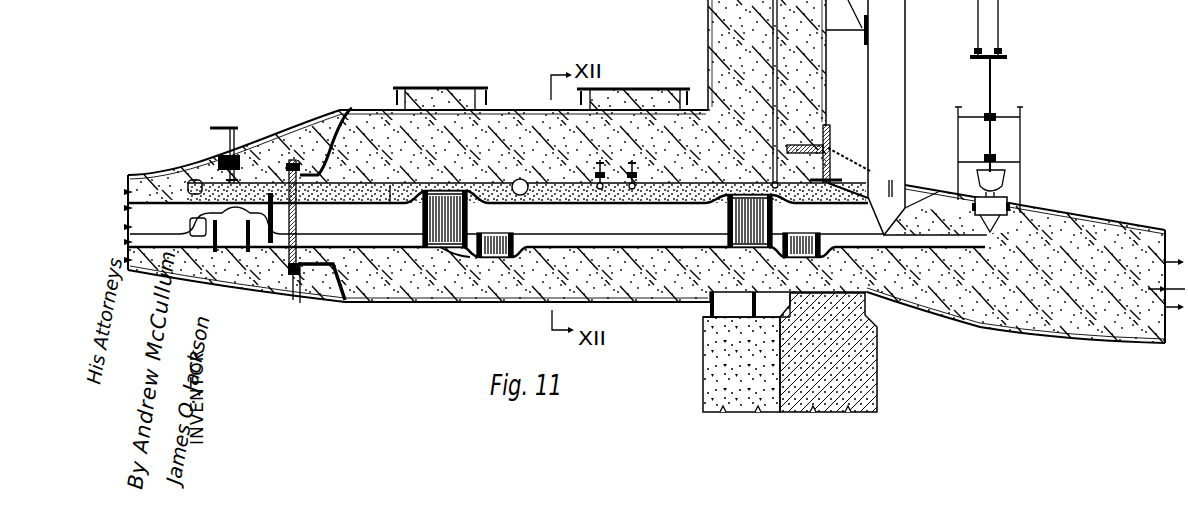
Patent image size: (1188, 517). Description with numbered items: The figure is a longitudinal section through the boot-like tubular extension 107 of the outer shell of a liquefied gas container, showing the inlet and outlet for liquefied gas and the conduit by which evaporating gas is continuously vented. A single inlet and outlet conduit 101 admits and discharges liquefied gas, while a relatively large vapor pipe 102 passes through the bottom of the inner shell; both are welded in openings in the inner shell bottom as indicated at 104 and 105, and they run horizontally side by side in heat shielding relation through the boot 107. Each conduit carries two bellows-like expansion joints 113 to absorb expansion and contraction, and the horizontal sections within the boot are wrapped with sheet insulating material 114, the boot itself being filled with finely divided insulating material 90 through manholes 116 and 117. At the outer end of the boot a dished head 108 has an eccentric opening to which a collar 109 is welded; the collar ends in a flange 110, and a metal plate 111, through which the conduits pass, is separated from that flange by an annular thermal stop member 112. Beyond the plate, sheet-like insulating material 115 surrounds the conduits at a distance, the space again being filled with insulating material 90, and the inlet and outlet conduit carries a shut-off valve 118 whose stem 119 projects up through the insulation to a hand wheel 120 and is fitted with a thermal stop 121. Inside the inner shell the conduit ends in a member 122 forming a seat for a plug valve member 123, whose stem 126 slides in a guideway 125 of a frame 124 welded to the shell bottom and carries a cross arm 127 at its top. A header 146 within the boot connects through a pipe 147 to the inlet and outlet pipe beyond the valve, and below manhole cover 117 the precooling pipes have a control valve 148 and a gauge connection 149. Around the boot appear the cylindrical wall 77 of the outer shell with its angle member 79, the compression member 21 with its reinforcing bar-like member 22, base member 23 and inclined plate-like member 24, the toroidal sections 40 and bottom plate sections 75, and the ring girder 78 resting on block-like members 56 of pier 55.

The insulating material 90 is at (481, 147).
The sheet-like insulating material 115 is at (182, 163).
The plate sections 75 is at (1032, 335).
The tubular extension 107 is at (520, 305).
The radially extending sections 40 is at (1117, 224).
The welded opening 105 is at (904, 183).
The cylindrical wall 77 is at (707, 20).
The compression member 21 is at (829, 134).
The bar-like member 22 is at (800, 146).
The base member 23 is at (826, 176).
The plate-like member 24 is at (833, 153).
The vapor pipe 102 is at (325, 220).
The inlet and outlet conduit 101 is at (912, 237).
The shut-off valve 118 is at (232, 240).
The metal plate 111 is at (288, 160).
The collar 109 is at (320, 272).
The flange 110 is at (301, 303).
The thermal stop member 112 is at (294, 298).
The hand wheel 120 is at (219, 124).
The valve stem 119 is at (229, 142).
The thermal stop 121 is at (222, 160).
The dished head 108 is at (355, 115).
The pipe 147 is at (390, 187).
The header 146 is at (522, 180).
The manhole 116 is at (426, 88).
The manhole 117 is at (636, 88).
The control valve 148 is at (600, 190).
The connection 149 is at (640, 188).
The bellows-like expansion joints 113 is at (508, 242).
The sheet insulating material 114 is at (448, 255).
The cross arm 127 is at (1005, 56).
The valve stem 126 is at (988, 90).
The frame 124 is at (1022, 135).
The guideway 125 is at (997, 157).
The plug valve member 123 is at (1000, 178).
The seat member 122 is at (997, 205).
The welded opening 104 is at (1003, 215).
The block-like members 56 is at (703, 373).
The pier 55 is at (850, 381).
The ring girder 78 is at (752, 300).
The angle member 79 is at (708, 310).